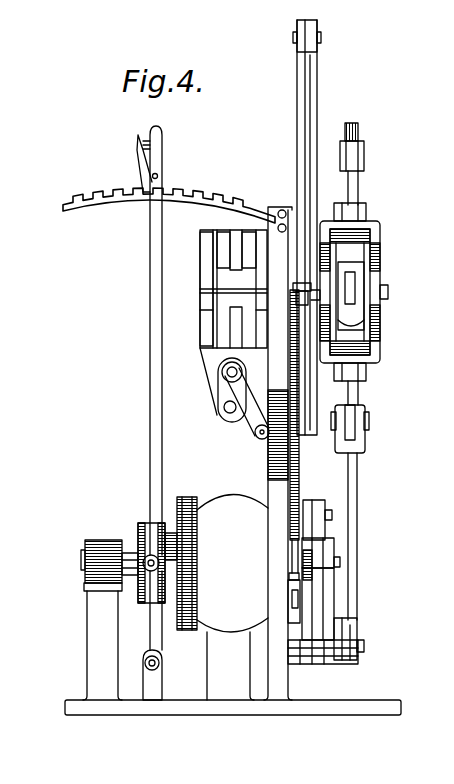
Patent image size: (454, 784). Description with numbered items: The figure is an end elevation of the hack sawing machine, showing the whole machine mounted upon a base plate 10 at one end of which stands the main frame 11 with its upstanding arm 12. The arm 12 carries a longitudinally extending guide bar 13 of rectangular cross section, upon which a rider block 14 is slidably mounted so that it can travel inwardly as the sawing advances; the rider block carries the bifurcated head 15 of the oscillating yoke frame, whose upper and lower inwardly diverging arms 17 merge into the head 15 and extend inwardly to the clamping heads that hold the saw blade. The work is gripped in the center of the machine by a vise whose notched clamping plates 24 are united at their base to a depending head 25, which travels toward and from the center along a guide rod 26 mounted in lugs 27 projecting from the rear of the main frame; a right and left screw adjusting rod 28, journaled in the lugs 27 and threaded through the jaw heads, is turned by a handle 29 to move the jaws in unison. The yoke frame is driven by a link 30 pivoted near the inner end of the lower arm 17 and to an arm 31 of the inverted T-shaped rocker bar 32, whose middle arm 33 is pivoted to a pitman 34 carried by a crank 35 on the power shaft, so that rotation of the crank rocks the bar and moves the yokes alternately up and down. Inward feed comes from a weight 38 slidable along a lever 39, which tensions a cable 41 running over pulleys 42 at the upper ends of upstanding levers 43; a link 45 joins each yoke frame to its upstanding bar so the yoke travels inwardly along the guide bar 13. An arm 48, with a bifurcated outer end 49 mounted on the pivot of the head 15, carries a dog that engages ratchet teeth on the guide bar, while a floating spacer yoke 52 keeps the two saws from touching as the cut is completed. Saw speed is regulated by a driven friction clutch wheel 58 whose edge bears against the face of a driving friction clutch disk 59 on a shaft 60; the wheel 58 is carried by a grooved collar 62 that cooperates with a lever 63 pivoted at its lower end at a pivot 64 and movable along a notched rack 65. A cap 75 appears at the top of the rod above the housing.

The base plate 10 is at (324, 712).
The main frame 11 is at (282, 489).
The upstanding arm 12 is at (280, 258).
The guide bar 13 is at (360, 305).
The rider block 14 is at (358, 272).
The bifurcated head 15 is at (373, 283).
The upper and lower arms 17 is at (359, 186).
The clamping plates 24 is at (258, 233).
The depending head 25 is at (215, 363).
The guide rod 26 is at (226, 418).
The lugs 27 is at (237, 424).
The screw adjusting rod 28 is at (226, 381).
The handle 29 is at (261, 440).
The link 30 is at (357, 593).
The rocker bar arm 31 is at (358, 662).
The rocker bar 32 is at (323, 663).
The middle arm 33 is at (318, 588).
The pitman 34 is at (326, 540).
The crank 35 is at (312, 515).
The weight 38 is at (292, 615).
The lever 39 is at (292, 597).
The cable 41 is at (297, 110).
The pulleys 42 is at (297, 27).
The upstanding levers 43 is at (306, 100).
The link 45 is at (295, 294).
The arm 48 is at (367, 330).
The outer end of arm 49 is at (348, 290).
The floating spacer yoke 52 is at (302, 463).
The driven friction clutch wheel 58 is at (188, 497).
The driving friction clutch disk 59 is at (232, 563).
The shaft 60 is at (83, 557).
The grooved collar 62 is at (140, 528).
The lever 63 is at (150, 403).
The pivot 64 is at (159, 663).
The notched rack 65 is at (118, 203).
The cap 75 is at (359, 132).